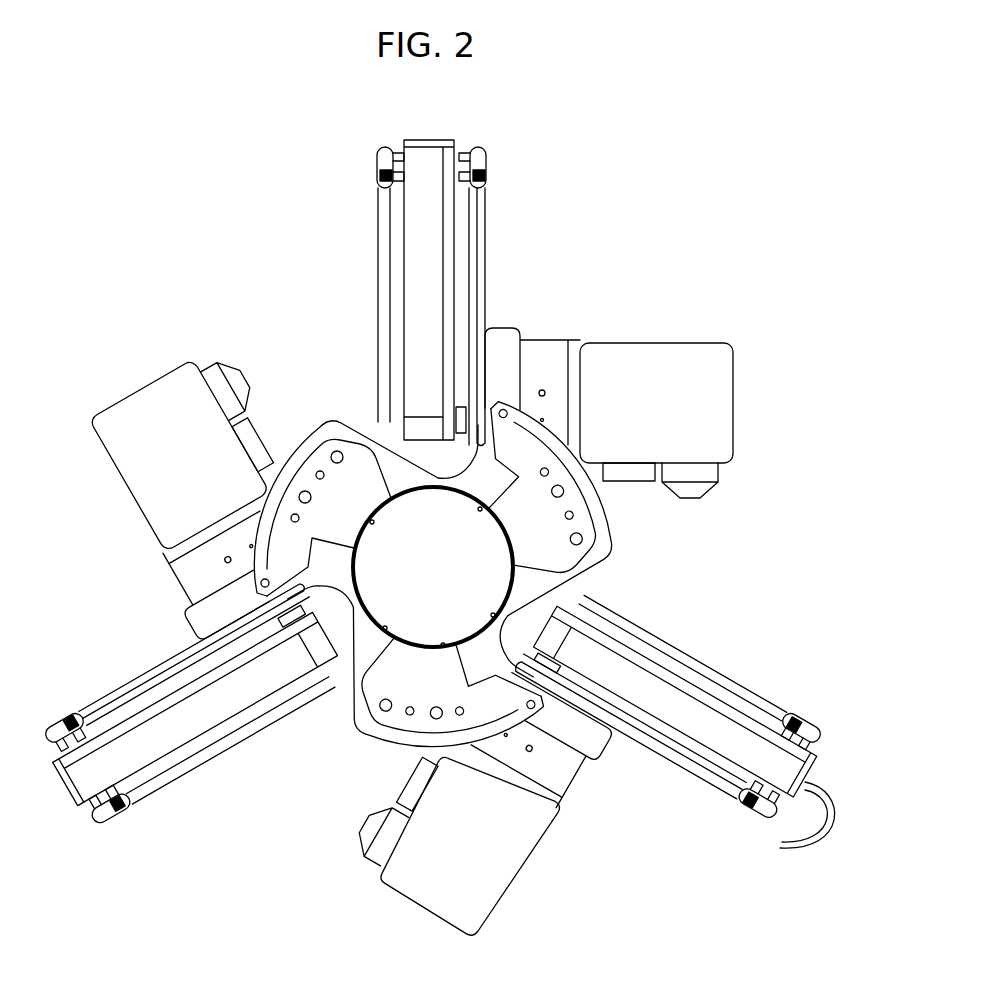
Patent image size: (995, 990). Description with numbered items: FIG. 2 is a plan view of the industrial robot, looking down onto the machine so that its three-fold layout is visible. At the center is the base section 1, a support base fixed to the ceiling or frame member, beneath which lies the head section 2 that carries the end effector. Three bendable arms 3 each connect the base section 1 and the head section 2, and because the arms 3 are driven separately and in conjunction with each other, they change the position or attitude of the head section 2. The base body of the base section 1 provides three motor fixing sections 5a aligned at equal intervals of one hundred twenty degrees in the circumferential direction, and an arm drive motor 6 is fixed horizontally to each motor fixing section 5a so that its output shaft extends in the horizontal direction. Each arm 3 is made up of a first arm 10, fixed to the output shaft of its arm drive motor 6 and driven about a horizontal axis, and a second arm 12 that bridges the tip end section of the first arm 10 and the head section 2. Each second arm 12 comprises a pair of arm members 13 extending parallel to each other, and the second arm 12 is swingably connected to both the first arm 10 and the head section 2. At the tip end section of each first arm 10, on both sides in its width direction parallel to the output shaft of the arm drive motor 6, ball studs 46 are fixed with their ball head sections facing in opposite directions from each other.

The base section 1 is at (357, 424).
The head section 2 is at (340, 488).
The arm 3 is at (438, 496).
The motor fixing section 5a is at (502, 332).
The arm drive motor 6 is at (718, 350).
The first arm 10 is at (432, 252).
The second arm 12 is at (433, 526).
The arm member 13 is at (478, 202).
The ball stud 46 is at (390, 148).